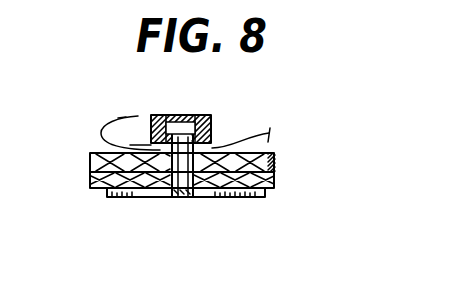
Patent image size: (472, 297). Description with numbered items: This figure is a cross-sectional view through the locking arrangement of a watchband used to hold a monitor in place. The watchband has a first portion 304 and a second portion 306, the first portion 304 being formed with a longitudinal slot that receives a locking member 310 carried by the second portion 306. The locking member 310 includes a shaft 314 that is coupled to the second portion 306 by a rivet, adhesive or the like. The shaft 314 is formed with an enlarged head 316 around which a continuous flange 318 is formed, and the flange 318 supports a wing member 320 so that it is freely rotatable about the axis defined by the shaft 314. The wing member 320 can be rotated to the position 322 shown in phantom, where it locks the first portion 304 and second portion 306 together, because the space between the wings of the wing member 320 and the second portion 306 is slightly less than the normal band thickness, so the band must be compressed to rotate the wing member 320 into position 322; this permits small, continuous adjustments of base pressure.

The first portion 304 is at (276, 166).
The second portion 306 is at (278, 185).
The locking member 310 is at (192, 106).
The shaft 314 is at (181, 190).
The enlarged head 316 is at (198, 111).
The continuous flange 318 is at (236, 112).
The wing member 320 is at (151, 115).
The position 322 is at (272, 139).